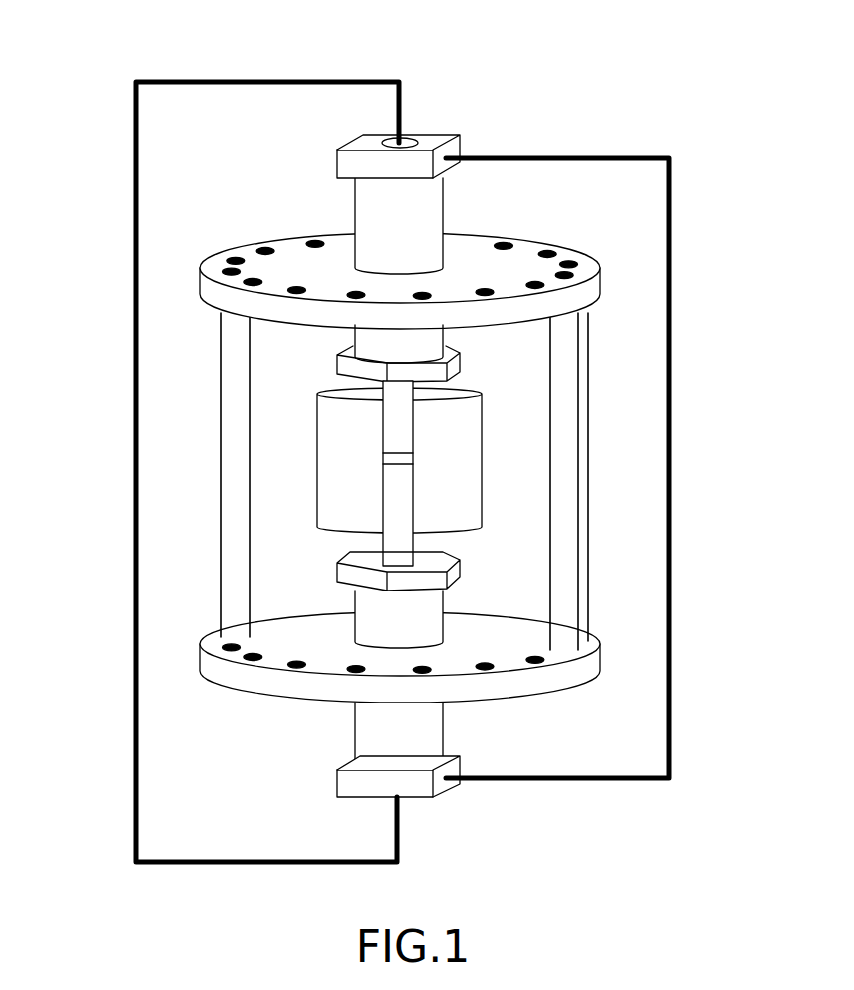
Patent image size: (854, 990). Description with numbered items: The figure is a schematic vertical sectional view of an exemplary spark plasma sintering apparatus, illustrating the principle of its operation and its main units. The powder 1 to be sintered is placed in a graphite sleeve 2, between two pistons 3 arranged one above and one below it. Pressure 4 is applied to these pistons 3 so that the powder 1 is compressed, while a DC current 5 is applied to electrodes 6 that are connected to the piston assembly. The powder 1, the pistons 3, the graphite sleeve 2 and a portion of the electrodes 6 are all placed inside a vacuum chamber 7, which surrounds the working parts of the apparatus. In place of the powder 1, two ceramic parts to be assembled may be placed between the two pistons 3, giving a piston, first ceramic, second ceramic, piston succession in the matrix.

The powder 1 is at (400, 458).
The graphite sleeve 2 is at (458, 470).
The pistons 3 is at (400, 424).
The pressure 4 is at (270, 78).
The DC current 5 is at (671, 184).
The electrodes 6 is at (421, 207).
The vacuum chamber 7 is at (236, 362).